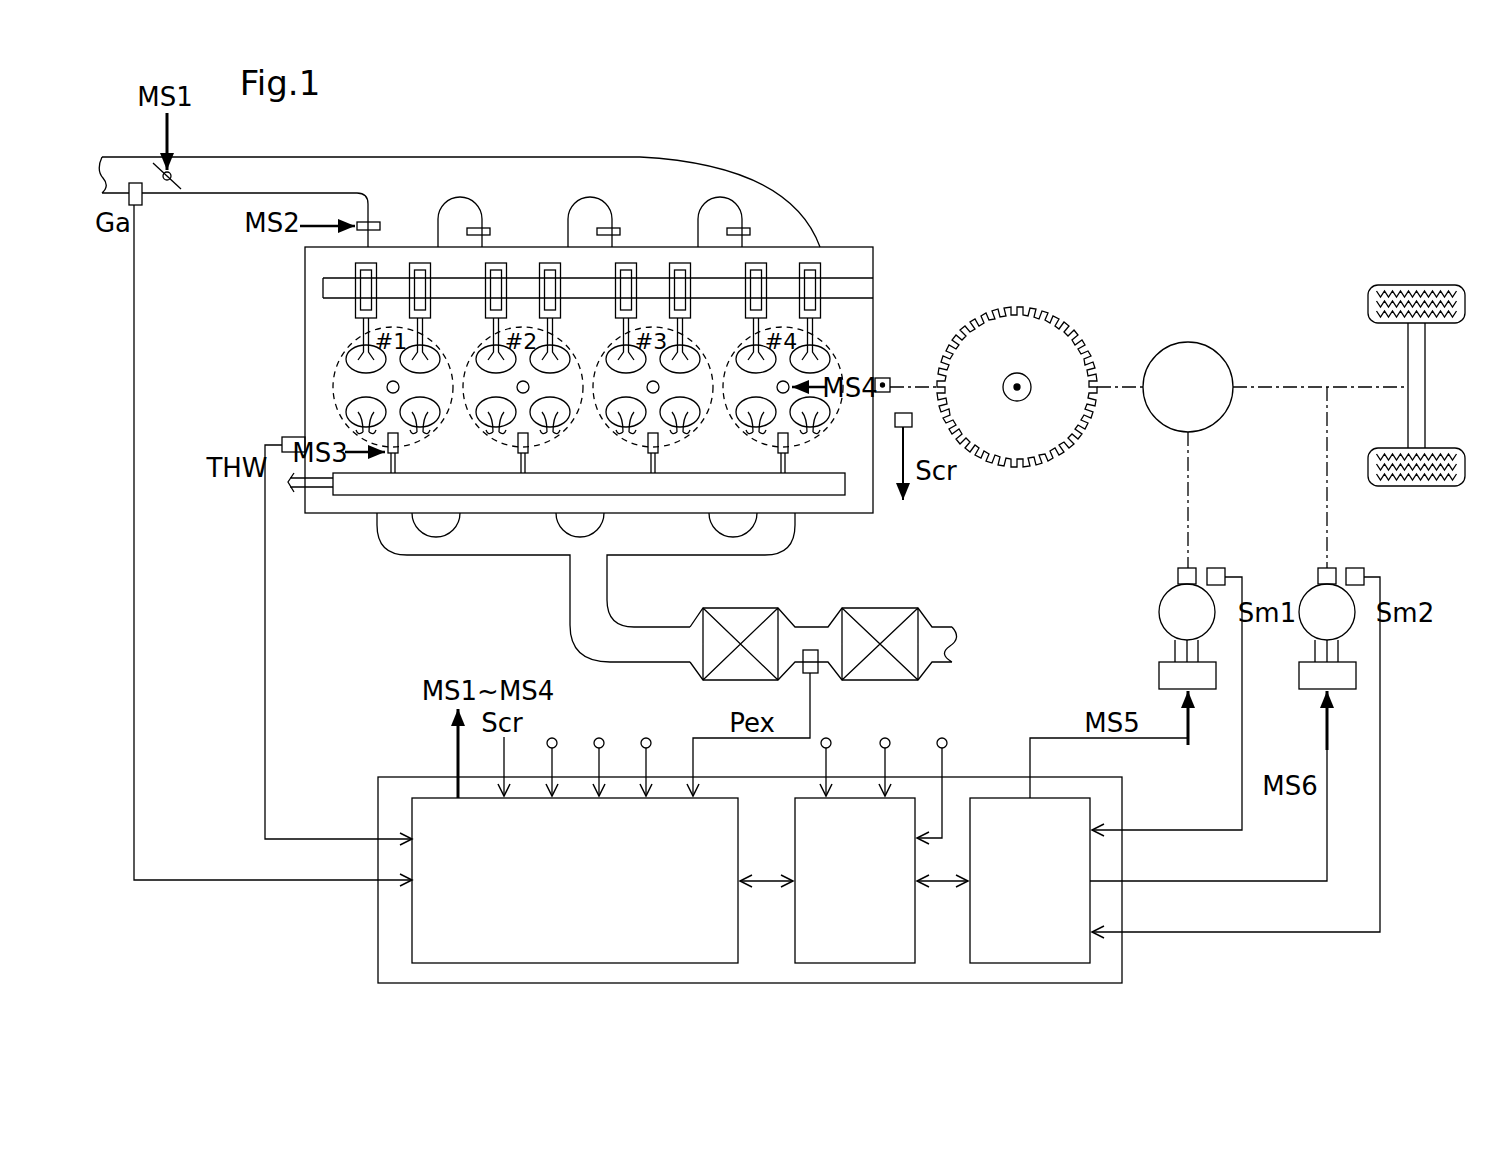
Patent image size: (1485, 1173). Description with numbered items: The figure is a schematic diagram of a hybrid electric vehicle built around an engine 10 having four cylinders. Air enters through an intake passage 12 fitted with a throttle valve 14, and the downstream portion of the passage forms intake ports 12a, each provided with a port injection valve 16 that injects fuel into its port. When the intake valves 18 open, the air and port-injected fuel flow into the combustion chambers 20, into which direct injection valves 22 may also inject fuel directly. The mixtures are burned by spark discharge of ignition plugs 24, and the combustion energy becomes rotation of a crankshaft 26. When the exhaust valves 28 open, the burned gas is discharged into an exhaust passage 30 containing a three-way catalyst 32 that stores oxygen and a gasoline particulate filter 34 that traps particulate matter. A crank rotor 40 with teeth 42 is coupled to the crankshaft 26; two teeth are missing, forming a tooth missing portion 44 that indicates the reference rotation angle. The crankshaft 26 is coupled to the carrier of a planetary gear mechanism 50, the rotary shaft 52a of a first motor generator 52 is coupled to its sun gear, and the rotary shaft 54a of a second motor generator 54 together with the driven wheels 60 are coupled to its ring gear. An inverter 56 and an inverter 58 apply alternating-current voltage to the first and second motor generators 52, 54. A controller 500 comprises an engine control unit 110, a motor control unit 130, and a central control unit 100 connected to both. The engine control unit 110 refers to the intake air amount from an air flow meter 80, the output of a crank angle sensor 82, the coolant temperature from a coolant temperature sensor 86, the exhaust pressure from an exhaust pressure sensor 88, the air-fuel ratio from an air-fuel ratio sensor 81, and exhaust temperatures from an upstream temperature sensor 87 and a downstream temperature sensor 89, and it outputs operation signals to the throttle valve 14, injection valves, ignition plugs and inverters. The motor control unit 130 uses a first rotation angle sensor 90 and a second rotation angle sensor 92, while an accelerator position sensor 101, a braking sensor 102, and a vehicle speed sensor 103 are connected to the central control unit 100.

The engine 10 is at (876, 222).
The intake passage 12 is at (133, 165).
The intake ports 12a is at (800, 215).
The throttle valve 14 is at (181, 168).
The port injection valves 16 is at (698, 222).
The intake valves 18 is at (358, 320).
The combustion chambers 20 is at (333, 380).
The direct injection valves 22 is at (400, 447).
The ignition plugs 24 is at (400, 384).
The crankshaft 26 is at (884, 376).
The exhaust valves 28 is at (427, 430).
The exhaust passage 30 is at (663, 556).
The three-way catalyst 32 is at (745, 608).
The gasoline particulate filter 34 is at (883, 608).
The crank rotor 40 is at (1042, 351).
The teeth 42 is at (1075, 332).
The tooth missing portion 44 is at (1088, 358).
The planetary gear mechanism 50 is at (1226, 360).
The first motor generator 52 is at (1160, 608).
The rotary shaft of first motor generator 52a is at (1178, 578).
The second motor generator 54 is at (1300, 600).
The rotary shaft of second motor generator 54a is at (1322, 568).
The inverter 56 is at (1159, 677).
The inverter 58 is at (1297, 683).
The driven wheels 60 is at (1462, 486).
The air flow meter 80 is at (152, 199).
The air-fuel ratio sensor 81 is at (556, 736).
The crank angle sensor 82 is at (912, 426).
The coolant temperature sensor 86 is at (282, 440).
The upstream temperature sensor 87 is at (603, 736).
The exhaust pressure sensor 88 is at (819, 676).
The downstream temperature sensor 89 is at (651, 736).
The first rotation angle sensor 90 is at (1216, 568).
The second rotation angle sensor 92 is at (1355, 568).
The central control unit 100 is at (850, 798).
The accelerator position sensor 101 is at (820, 748).
The braking sensor 102 is at (889, 736).
The vehicle speed sensor 103 is at (946, 736).
The engine control unit 110 is at (415, 797).
The motor control unit 130 is at (977, 798).
The controller 500 is at (1075, 777).